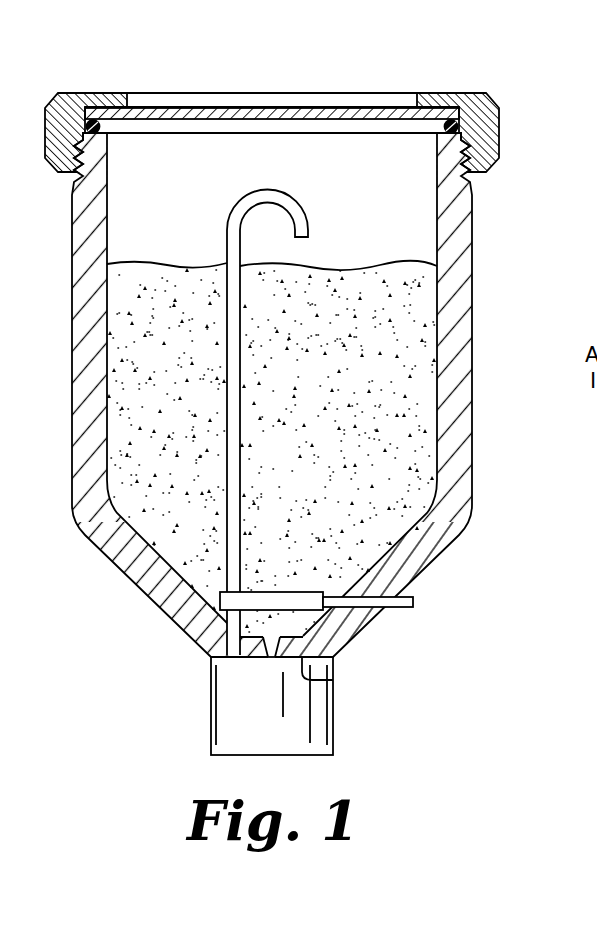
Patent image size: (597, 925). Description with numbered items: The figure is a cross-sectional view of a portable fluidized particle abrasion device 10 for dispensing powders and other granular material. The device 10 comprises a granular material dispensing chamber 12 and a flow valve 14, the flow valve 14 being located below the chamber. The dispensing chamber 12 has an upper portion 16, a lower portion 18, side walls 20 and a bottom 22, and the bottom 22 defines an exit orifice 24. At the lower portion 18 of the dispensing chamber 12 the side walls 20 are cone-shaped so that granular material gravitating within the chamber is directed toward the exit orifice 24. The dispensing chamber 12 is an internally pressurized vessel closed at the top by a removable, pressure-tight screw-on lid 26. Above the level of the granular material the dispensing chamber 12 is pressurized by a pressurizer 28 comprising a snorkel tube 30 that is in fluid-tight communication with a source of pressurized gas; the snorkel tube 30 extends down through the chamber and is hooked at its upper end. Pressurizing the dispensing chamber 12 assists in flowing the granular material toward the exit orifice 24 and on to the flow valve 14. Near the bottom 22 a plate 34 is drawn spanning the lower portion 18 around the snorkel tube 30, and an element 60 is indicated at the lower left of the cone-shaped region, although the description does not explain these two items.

The fluidized particle abrasion device 10 is at (518, 79).
The granular material dispensing chamber 12 is at (298, 366).
The flow valve 14 is at (329, 703).
The upper portion 16 is at (473, 237).
The lower portion 18 is at (437, 558).
The side walls 20 is at (473, 373).
The bottom 22 is at (333, 678).
The exit orifice 24 is at (272, 645).
The screw-on lid 26 is at (500, 128).
The pressurizer 28 is at (309, 201).
The snorkel tube 30 is at (266, 410).
The plate 34 is at (222, 620).
The outlet floor 60 is at (212, 645).